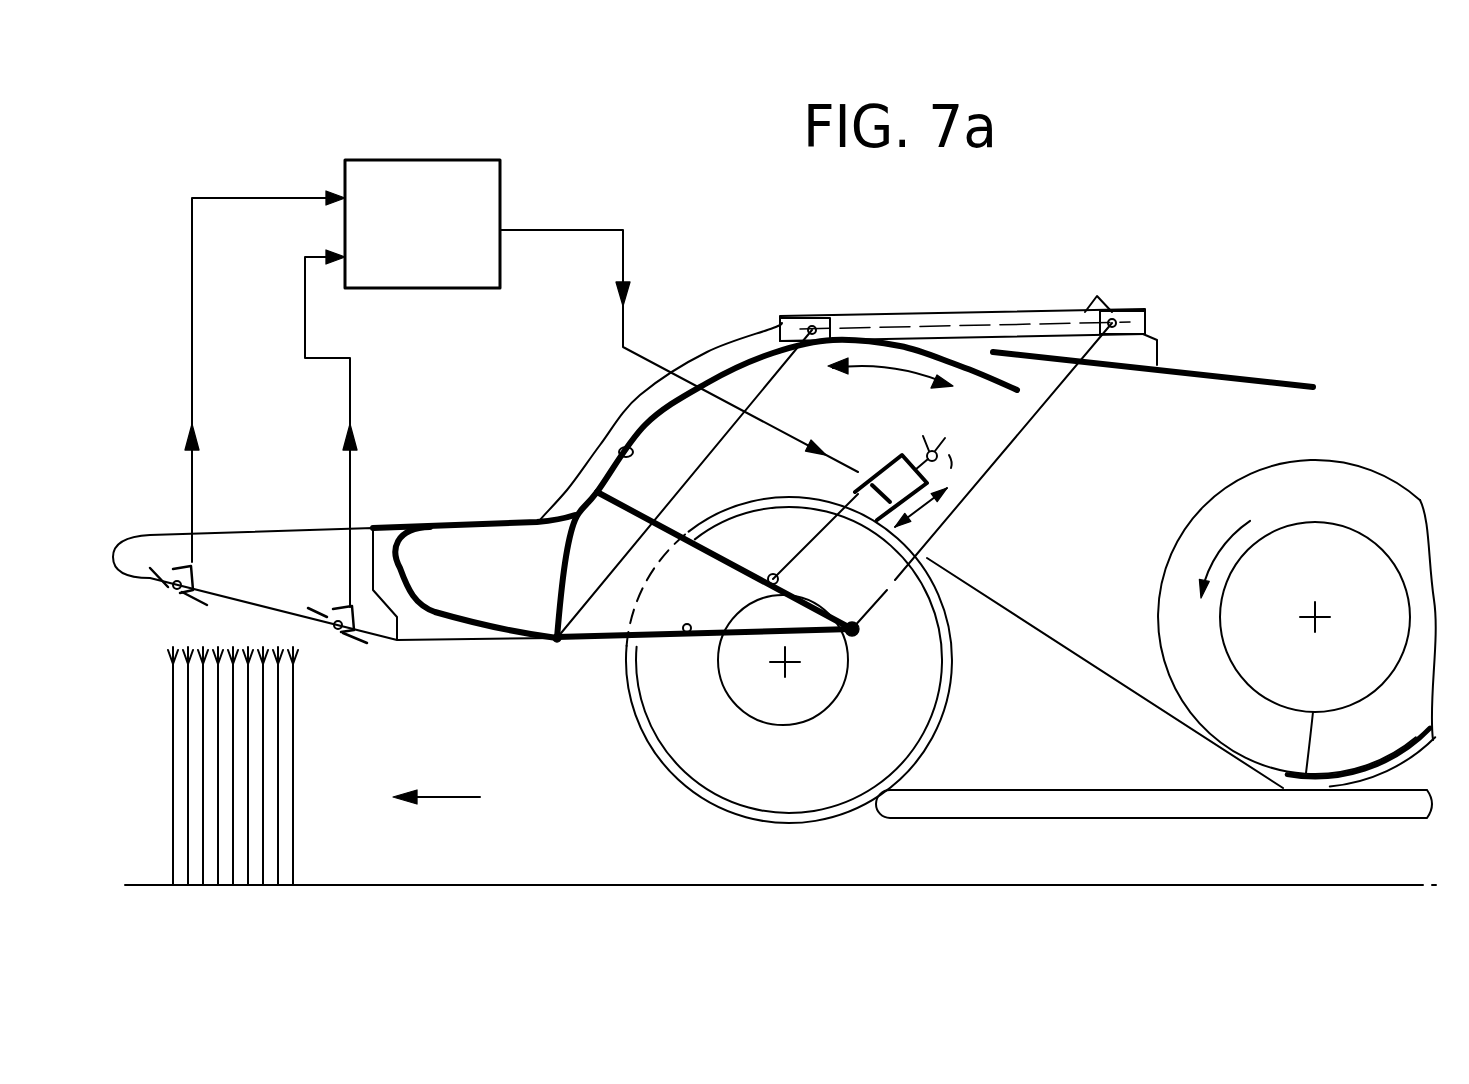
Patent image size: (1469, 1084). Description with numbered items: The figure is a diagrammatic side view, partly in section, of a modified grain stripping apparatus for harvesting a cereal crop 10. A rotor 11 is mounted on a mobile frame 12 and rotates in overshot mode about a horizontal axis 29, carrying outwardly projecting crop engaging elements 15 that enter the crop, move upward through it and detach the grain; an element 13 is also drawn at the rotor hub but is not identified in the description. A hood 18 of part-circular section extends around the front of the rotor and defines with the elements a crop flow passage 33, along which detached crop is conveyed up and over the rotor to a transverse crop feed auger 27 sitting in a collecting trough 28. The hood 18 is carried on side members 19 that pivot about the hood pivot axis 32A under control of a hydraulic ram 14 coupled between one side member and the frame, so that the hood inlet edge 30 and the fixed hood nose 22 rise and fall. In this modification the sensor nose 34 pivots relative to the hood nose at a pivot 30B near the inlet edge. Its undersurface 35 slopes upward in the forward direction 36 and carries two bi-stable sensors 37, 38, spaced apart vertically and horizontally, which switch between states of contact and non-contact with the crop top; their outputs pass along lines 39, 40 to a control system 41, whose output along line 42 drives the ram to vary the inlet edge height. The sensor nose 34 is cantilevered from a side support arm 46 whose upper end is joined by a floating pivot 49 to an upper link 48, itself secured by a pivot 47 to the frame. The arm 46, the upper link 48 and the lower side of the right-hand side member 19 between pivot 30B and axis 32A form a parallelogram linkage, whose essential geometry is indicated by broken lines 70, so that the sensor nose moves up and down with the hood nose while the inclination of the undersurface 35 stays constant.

The cereal crop 10 is at (172, 708).
The rotor 11 is at (680, 738).
The mobile frame 12 is at (944, 454).
The drum hub 13 is at (833, 708).
The hydraulic ram 14 is at (898, 455).
The crop engaging elements 15 is at (626, 710).
The hood 18 is at (600, 450).
The side members 19 is at (800, 620).
The hood nose 22 is at (467, 520).
The transverse crop feed auger 27 is at (1263, 468).
The collecting trough 28 is at (1350, 770).
The horizontal axis 29 is at (786, 668).
The hood inlet edge 30 is at (556, 640).
The pivot 30B is at (560, 636).
The hood pivot axis 32A is at (855, 637).
The crop flow passage 33 is at (705, 443).
The sensor nose 34 is at (240, 528).
The undersurface 35 is at (228, 603).
The forward direction 36 is at (445, 793).
The bi-stable sensor 37 is at (172, 591).
The bi-stable sensor 38 is at (343, 640).
The line 39 is at (196, 406).
The line 40 is at (353, 406).
The control system 41 is at (502, 158).
The line 42 is at (598, 230).
The side support arm 46 is at (614, 418).
The pivot 47 is at (1160, 268).
The upper link 48 is at (965, 312).
The floating pivot 49 is at (812, 326).
The broken lines 70 is at (687, 633).